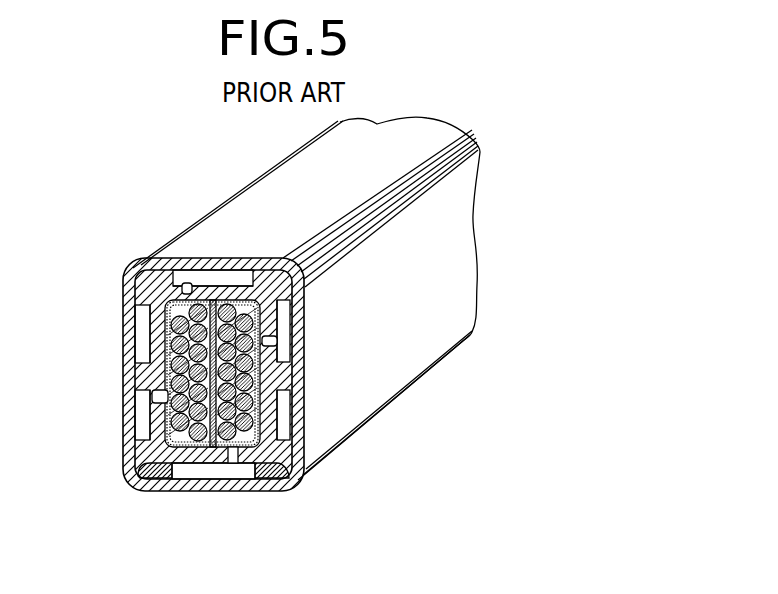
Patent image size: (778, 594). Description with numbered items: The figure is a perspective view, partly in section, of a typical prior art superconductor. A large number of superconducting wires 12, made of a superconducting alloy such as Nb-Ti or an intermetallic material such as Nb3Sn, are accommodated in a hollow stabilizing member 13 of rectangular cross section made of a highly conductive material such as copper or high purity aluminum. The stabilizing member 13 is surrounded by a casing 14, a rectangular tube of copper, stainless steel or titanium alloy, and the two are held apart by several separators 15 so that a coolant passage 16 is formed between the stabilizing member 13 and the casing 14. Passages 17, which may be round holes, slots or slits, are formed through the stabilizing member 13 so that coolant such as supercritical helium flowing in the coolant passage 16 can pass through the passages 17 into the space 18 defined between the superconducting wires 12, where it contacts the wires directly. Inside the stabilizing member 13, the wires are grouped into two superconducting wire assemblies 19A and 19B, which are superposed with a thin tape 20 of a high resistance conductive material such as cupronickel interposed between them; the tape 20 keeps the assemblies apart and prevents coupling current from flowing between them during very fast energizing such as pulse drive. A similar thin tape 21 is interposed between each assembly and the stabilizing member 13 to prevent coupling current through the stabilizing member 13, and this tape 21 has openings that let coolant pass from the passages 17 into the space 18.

The superconducting wires 12 is at (170, 398).
The stabilizing member 13 is at (158, 322).
The casing 14 is at (455, 331).
The separators 15 is at (138, 282).
The coolant passage 16 is at (143, 423).
The passages 17 is at (278, 343).
The space 18 is at (222, 292).
The superconducting wire assembly 19A is at (127, 477).
The superconducting wire assembly 19B is at (198, 490).
The thin tape 20 is at (177, 492).
The thin tape 21 is at (158, 348).